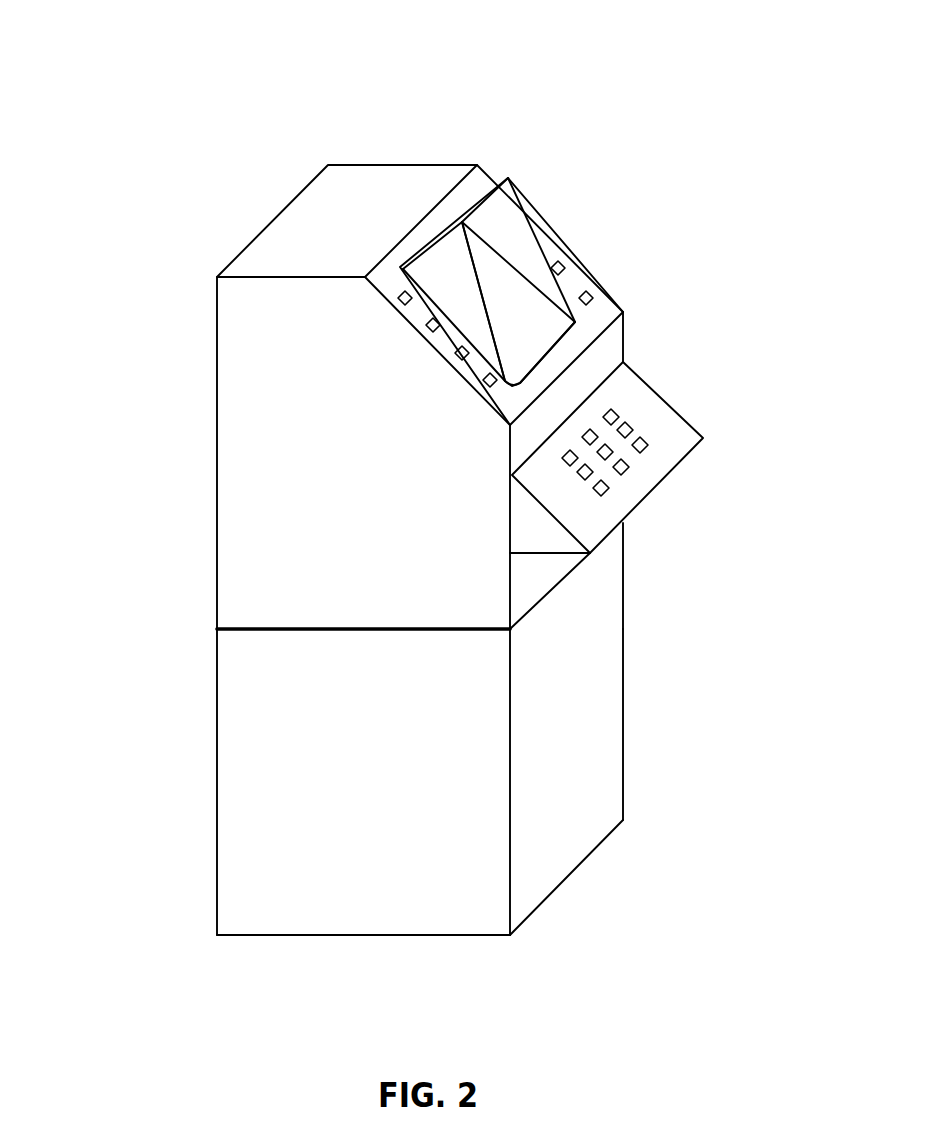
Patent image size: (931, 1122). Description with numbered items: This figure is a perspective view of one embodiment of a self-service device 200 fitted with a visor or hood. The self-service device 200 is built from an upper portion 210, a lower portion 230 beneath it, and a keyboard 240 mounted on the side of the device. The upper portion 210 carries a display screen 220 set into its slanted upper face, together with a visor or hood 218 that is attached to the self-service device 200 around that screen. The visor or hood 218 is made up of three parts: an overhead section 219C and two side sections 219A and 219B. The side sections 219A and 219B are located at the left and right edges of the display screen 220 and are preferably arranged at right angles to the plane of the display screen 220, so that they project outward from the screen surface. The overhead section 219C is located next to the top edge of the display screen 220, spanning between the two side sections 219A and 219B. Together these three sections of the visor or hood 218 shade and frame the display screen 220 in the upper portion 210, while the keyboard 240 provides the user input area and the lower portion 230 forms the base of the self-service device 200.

The self-service device 200 is at (122, 45).
The upper portion 210 is at (273, 218).
The visor or hood 218 is at (508, 178).
The side section 219A is at (467, 307).
The side section 219B is at (528, 250).
The overhead section 219C is at (458, 217).
The display screen 220 is at (540, 333).
The lower portion 230 is at (232, 807).
The keyboard 240 is at (677, 468).